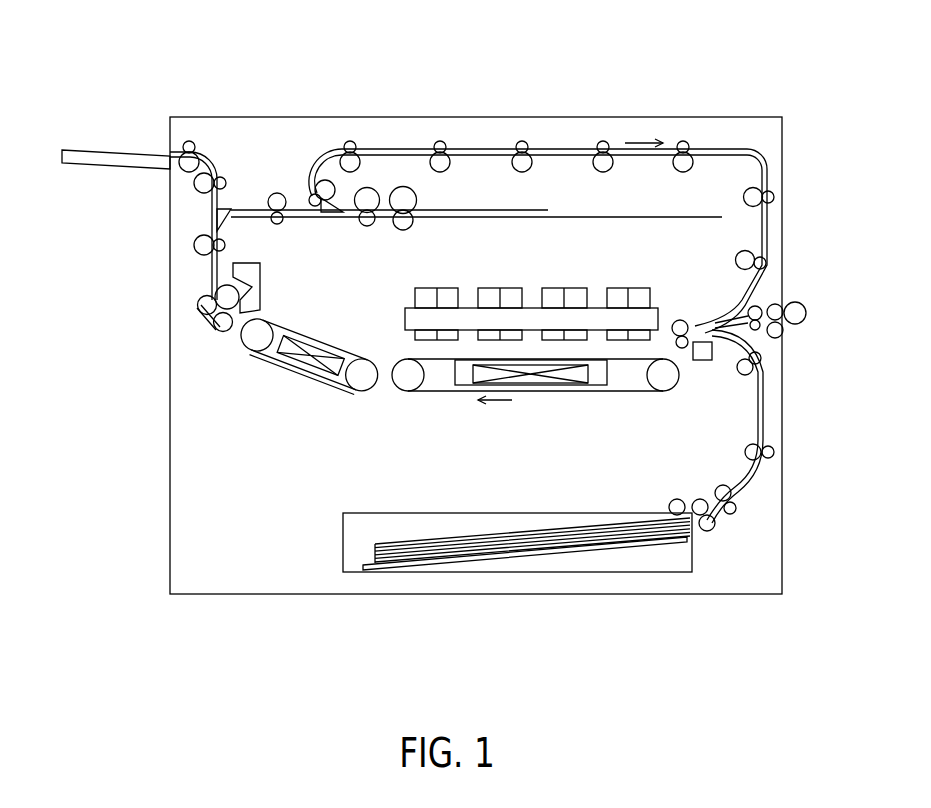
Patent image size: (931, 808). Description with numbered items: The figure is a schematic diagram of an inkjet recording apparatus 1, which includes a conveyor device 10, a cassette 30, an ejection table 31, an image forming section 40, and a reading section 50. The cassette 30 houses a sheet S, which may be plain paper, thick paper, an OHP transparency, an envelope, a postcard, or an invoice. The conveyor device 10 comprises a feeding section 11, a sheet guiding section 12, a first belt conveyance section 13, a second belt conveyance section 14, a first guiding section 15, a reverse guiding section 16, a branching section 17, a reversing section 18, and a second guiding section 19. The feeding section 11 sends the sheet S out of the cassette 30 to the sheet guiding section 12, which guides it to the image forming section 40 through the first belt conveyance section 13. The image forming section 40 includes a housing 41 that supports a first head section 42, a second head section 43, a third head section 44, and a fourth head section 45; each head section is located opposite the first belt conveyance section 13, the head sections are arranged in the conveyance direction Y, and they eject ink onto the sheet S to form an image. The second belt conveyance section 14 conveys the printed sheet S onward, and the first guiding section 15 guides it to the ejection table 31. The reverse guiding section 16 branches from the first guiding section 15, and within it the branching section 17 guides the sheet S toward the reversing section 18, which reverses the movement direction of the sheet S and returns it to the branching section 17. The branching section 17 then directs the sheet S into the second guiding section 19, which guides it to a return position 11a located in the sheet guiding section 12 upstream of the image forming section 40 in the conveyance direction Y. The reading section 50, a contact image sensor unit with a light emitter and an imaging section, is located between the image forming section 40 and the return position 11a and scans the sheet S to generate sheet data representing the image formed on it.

The inkjet recording apparatus 1 is at (707, 88).
The conveyor device 10 is at (332, 137).
The feeding section 11 is at (690, 502).
The return position 11a is at (703, 317).
The sheet guiding section 12 is at (770, 427).
The first belt conveyance section 13 is at (555, 402).
The second belt conveyance section 14 is at (295, 382).
The first guiding section 15 is at (195, 218).
The reverse guiding section 16 is at (522, 197).
The branching section 17 is at (326, 222).
The reversing section 18 is at (405, 182).
The second guiding section 19 is at (313, 187).
The cassette 30 is at (343, 535).
The ejection table 31 is at (110, 148).
The image forming section 40 is at (498, 279).
The housing 41 is at (405, 318).
The first head section 42 is at (630, 282).
The second head section 43 is at (565, 282).
The third head section 44 is at (502, 282).
The fourth head section 45 is at (435, 282).
The reading section 50 is at (702, 360).
The sheet S is at (520, 532).
The conveyance direction Y is at (495, 418).